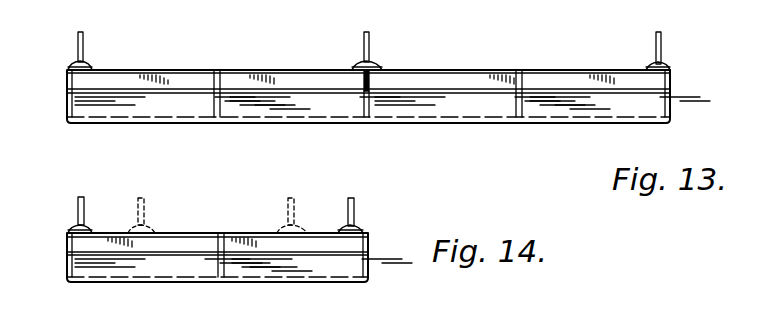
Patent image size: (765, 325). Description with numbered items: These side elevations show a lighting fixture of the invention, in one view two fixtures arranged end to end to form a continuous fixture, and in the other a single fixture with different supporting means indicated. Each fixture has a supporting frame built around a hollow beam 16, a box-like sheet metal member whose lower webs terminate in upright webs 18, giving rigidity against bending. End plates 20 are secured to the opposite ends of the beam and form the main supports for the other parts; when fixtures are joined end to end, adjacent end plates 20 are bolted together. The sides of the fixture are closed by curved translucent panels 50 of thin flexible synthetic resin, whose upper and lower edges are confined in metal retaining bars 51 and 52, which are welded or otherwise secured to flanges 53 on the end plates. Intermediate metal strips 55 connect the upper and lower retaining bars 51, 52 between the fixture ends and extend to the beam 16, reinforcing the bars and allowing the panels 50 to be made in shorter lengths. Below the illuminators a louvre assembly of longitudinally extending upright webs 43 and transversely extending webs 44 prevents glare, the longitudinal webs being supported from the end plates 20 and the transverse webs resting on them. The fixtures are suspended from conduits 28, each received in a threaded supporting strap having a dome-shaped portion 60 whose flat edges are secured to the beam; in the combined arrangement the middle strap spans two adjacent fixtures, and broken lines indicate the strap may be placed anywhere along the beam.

In FIG. 13, the hollow beam 16 is at (257, 78).
In FIG. 14, the hollow beam 16 is at (185, 248).
In FIG. 13, the upright webs 18 is at (368, 81).
In FIG. 14, the upright webs 18 is at (293, 241).
In FIG. 13, the end plates 20 is at (67, 75).
In FIG. 14, the end plates 20 is at (67, 243).
In FIG. 13, the conduit 28 is at (83, 37).
In FIG. 14, the conduit 28 is at (137, 201).
In FIG. 13, the longitudinally extending upright webs 43 is at (232, 126).
In FIG. 14, the longitudinally extending upright webs 43 is at (297, 282).
In FIG. 13, the transversely extending webs 44 is at (170, 123).
In FIG. 14, the transversely extending webs 44 is at (170, 282).
In FIG. 13, the translucent panels 50 is at (392, 104).
In FIG. 14, the translucent panels 50 is at (243, 261).
In FIG. 13, the upper retaining bar 51 is at (603, 93).
In FIG. 14, the upper retaining bar 51 is at (163, 253).
In FIG. 13, the lower retaining bar 52 is at (580, 118).
In FIG. 14, the lower retaining bar 52 is at (255, 276).
In FIG. 13, the flanges 53 is at (67, 105).
In FIG. 14, the flanges 53 is at (370, 262).
In FIG. 13, the intermediate metal strips 55 is at (212, 80).
In FIG. 14, the intermediate metal strips 55 is at (223, 237).
In FIG. 13, the dome-shaped portion 60 is at (88, 63).
In FIG. 14, the dome-shaped portion 60 is at (134, 229).